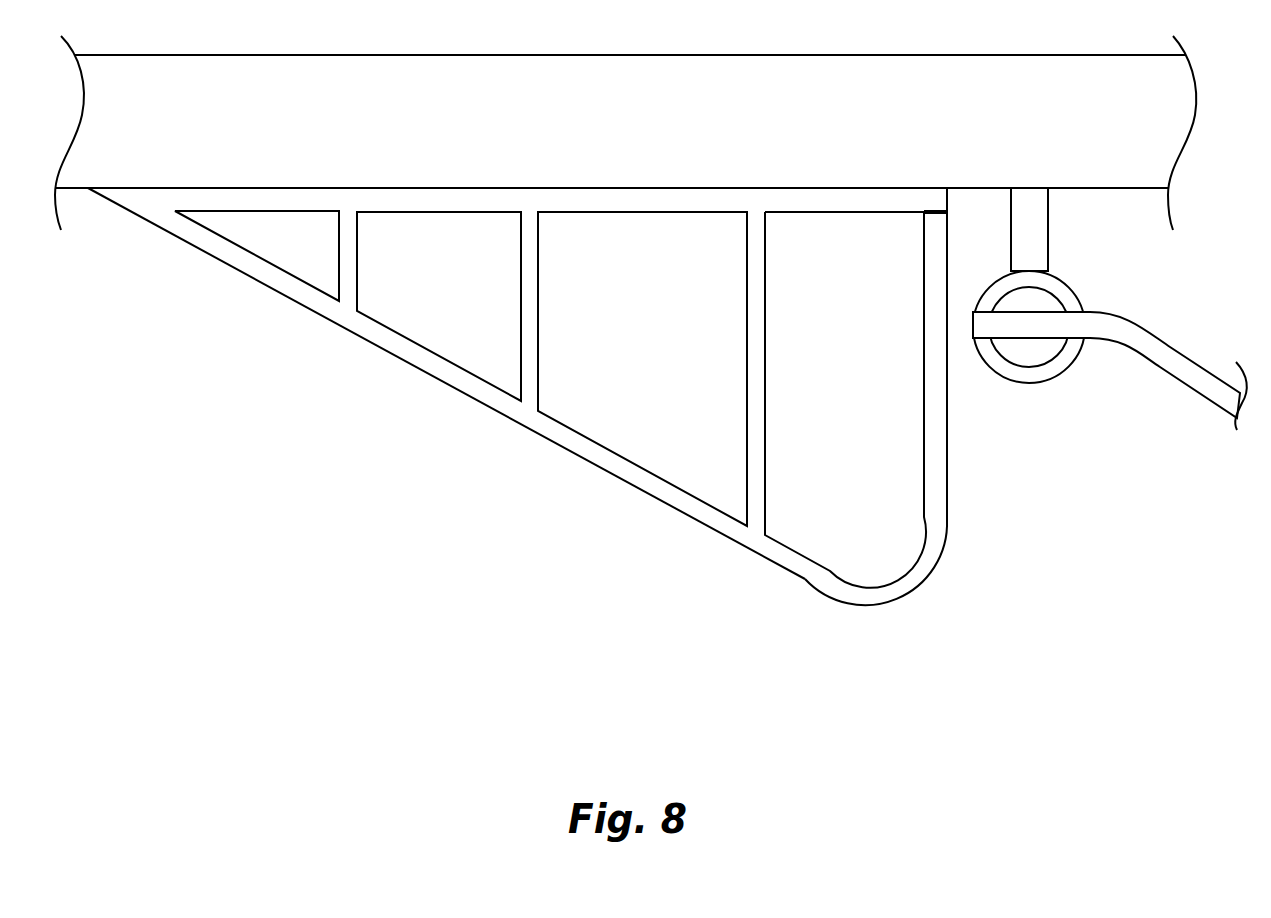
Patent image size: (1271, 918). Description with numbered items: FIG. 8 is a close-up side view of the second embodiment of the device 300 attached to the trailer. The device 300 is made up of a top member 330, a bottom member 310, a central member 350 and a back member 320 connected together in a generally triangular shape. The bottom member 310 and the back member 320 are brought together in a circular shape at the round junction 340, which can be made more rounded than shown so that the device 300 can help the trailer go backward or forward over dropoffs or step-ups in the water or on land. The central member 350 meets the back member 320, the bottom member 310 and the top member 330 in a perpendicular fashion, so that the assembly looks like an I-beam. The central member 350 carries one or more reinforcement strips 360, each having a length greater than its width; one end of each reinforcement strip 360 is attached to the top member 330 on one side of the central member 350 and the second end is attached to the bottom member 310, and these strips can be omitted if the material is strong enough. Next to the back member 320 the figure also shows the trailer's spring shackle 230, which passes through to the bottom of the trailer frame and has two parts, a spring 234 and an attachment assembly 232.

The spring shackle 230 is at (1110, 349).
The attachment assembly 232 is at (1060, 368).
The spring 234 is at (1152, 362).
The device 300 is at (570, 445).
The bottom member 310 is at (463, 392).
The back member 320 is at (945, 497).
The top member 330 is at (643, 188).
The round junction 340 is at (908, 587).
The central member 350 is at (650, 412).
The reinforcement strips 360 is at (357, 231).